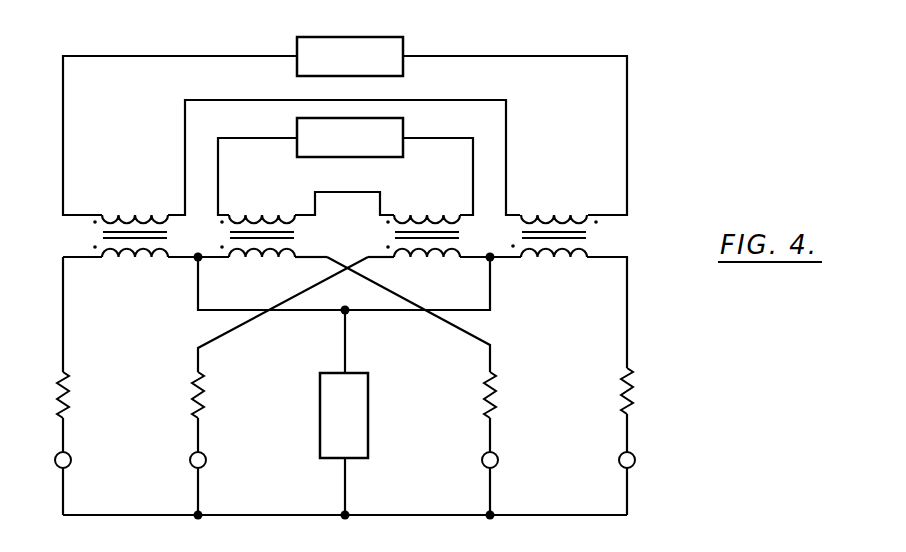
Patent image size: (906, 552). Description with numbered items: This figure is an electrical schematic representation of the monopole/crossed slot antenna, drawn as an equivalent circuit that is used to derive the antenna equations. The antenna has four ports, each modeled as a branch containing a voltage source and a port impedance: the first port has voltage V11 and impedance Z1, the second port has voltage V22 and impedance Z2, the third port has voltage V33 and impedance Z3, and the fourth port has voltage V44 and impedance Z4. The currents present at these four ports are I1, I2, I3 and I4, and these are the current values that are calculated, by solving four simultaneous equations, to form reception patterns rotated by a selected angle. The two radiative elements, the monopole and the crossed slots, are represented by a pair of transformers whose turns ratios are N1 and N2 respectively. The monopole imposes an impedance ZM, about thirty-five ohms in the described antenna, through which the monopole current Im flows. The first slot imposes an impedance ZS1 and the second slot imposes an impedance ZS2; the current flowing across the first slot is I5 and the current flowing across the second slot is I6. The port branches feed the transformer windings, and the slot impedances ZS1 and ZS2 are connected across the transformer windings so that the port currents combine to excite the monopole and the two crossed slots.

The turns ratio of transformer representing monopole N1 is at (111, 236).
The turns ratio of transformer representing crossed slots N2 is at (576, 236).
The first slot impedance ZS1 is at (350, 137).
The second slot impedance ZS2 is at (350, 56).
The monopole impedance ZM is at (344, 415).
The first port impedance Z1 is at (77, 395).
The second port impedance Z2 is at (211, 395).
The third port impedance Z3 is at (505, 395).
The fourth port impedance Z4 is at (641, 392).
The first port voltage V11 is at (39, 469).
The second port voltage V22 is at (179, 467).
The third port voltage V33 is at (469, 468).
The fourth port voltage V44 is at (606, 468).
The first port current I1 is at (50, 390).
The second port current I2 is at (176, 390).
The third port current I3 is at (467, 388).
The fourth port current I4 is at (608, 388).
The first slot current I5 is at (425, 128).
The second slot current I6 is at (502, 39).
The monopole current Im is at (329, 467).